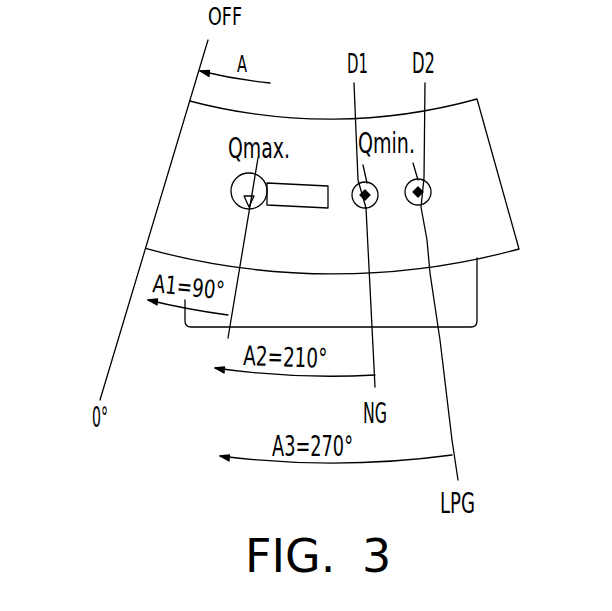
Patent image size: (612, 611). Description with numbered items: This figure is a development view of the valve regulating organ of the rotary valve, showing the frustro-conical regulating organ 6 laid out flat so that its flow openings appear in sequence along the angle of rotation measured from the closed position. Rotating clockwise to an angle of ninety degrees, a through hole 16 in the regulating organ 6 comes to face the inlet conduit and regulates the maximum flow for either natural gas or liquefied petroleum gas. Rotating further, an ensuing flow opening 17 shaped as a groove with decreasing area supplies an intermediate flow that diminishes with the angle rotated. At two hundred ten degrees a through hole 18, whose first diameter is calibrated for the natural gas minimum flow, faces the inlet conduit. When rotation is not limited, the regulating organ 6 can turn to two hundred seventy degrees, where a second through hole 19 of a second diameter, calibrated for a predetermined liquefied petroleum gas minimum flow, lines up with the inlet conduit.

The regulating organ 6 is at (478, 142).
The through hole 16 is at (231, 201).
The flow opening 17 is at (313, 200).
The through hole 18 is at (371, 208).
The second through hole 19 is at (427, 205).